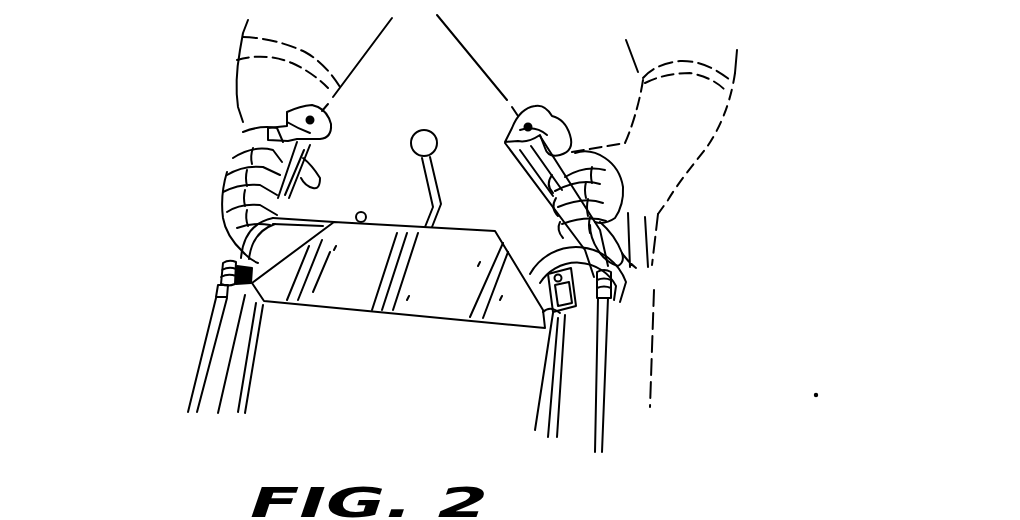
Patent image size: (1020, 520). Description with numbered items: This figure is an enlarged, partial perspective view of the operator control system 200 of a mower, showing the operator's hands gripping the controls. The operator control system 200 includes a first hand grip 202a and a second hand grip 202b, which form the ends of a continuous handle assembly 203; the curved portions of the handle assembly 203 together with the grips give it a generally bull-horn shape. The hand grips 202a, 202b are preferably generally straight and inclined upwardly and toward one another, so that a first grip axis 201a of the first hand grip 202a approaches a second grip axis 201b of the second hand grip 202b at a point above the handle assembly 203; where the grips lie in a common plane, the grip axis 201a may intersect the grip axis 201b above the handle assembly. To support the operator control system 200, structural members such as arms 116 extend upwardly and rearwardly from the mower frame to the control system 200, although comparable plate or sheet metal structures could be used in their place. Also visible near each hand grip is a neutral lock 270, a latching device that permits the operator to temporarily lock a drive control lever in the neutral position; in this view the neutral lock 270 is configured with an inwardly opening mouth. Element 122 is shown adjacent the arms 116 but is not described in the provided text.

The operator control system 200 is at (214, 101).
The first grip axis 201a is at (455, 36).
The second grip axis 201b is at (373, 42).
The first hand grip 202a is at (545, 178).
The second hand grip 202b is at (312, 153).
The neutral lock 270 is at (278, 113).
The handle assembly 203 is at (637, 267).
The arms 116 is at (253, 373).
The rod 122 is at (207, 337).